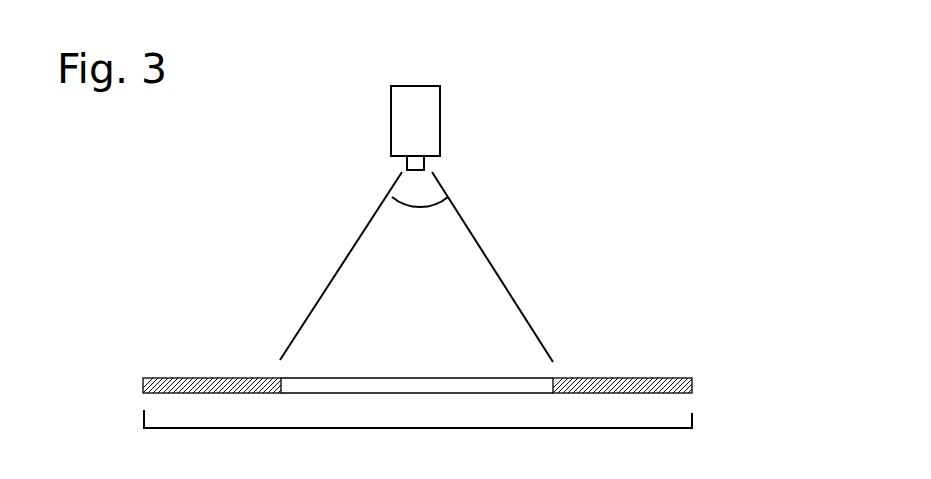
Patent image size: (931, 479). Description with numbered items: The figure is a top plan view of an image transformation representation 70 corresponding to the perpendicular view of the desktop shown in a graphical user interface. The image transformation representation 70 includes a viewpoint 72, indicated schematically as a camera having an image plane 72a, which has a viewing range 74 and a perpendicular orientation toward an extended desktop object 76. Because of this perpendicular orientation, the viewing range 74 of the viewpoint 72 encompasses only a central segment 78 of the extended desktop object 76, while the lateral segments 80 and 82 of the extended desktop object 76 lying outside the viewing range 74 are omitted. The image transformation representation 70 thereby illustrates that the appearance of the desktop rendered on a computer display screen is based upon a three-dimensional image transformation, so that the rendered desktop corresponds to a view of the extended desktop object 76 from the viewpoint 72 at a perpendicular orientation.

The image transformation representation 70 is at (592, 164).
The viewpoint 72 is at (410, 121).
The image plane 72a is at (402, 100).
The viewing range 74 is at (432, 205).
The extended desktop object 76 is at (692, 417).
The central segment 78 is at (377, 378).
The lateral segment 80 is at (172, 378).
The lateral segment 82 is at (650, 378).